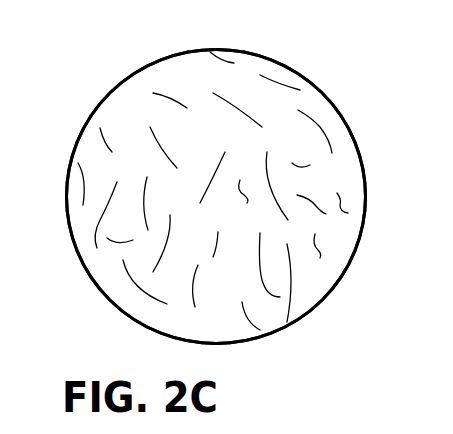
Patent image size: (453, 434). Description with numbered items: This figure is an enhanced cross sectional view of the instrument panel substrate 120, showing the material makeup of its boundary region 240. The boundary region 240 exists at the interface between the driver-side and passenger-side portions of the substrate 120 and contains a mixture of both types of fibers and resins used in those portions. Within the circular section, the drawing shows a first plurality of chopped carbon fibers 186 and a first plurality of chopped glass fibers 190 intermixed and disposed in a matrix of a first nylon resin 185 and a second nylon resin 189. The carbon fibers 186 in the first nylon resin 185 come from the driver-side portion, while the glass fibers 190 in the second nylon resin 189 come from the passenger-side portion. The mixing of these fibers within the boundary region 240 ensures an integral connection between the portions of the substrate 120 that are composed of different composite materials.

The instrument panel substrate 120 is at (327, 87).
The boundary region 240 is at (216, 197).
The first nylon resin 185 is at (120, 233).
The first plurality of chopped carbon fibers 186 is at (85, 182).
The second nylon resin 189 is at (300, 158).
The first plurality of chopped glass fibers 190 is at (237, 110).